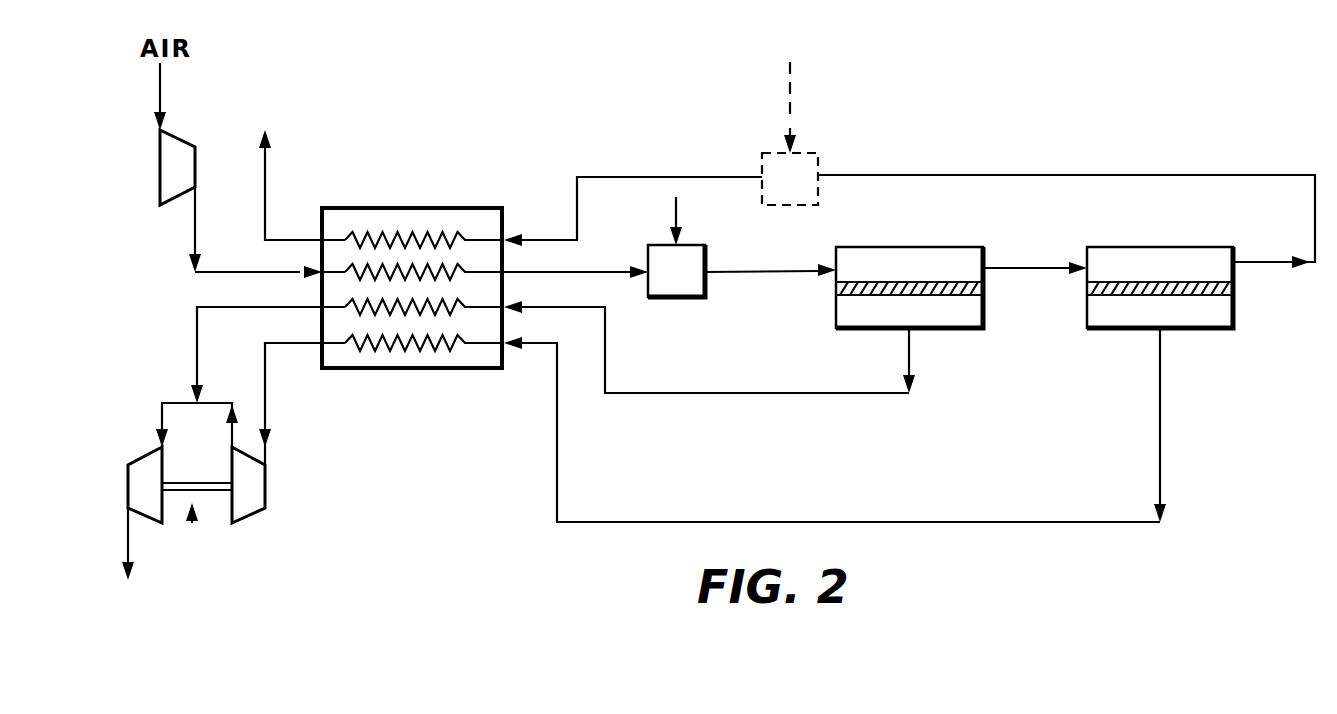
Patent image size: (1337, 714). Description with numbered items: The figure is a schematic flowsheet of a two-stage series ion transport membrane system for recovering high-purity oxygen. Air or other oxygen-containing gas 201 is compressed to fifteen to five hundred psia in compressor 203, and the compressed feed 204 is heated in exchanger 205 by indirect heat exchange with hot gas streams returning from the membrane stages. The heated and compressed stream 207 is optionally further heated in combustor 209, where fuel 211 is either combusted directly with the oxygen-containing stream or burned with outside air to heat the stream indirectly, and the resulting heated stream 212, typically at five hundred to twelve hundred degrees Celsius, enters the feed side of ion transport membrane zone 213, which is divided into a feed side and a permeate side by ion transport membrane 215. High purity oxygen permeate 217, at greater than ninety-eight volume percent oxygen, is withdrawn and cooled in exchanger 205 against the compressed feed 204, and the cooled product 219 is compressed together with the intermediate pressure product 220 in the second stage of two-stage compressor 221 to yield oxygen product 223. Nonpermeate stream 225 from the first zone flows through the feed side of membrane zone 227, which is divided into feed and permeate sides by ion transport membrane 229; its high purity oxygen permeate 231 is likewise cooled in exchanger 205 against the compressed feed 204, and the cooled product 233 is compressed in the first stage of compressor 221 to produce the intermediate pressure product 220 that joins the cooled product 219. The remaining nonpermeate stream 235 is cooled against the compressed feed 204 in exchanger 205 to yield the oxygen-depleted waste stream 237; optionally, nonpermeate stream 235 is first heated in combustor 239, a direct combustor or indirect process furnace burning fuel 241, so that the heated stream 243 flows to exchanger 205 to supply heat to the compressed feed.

The air or other oxygen-containing gas 201 is at (162, 94).
The compressor 203 is at (160, 172).
The compressed feed 204 is at (242, 270).
The exchanger 205 is at (387, 208).
The heated and compressed stream 207 is at (610, 274).
The combustor 209 is at (700, 298).
The fuel 211 is at (676, 210).
The heated stream 212 is at (760, 274).
The ion transport membrane zone 213 is at (928, 247).
The ion transport membrane 215 is at (935, 296).
The high purity oxygen permeate 217 is at (750, 395).
The cooled product 219 is at (197, 330).
The intermediate pressure product 220 is at (221, 403).
The two-stage compressor 221 is at (192, 526).
The oxygen product 223 is at (128, 520).
The nonpermeate stream 225 is at (1012, 268).
The membrane zone 227 is at (1088, 307).
The ion transport membrane 229 is at (1180, 296).
The high purity oxygen permeate 231 is at (1003, 522).
The cooled product 233 is at (266, 405).
The nonpermeate stream 235 is at (1196, 175).
The oxygen-depleted waste stream 237 is at (268, 185).
The combustor 239 is at (820, 153).
The fuel 241 is at (790, 100).
The heated stream 243 is at (631, 177).